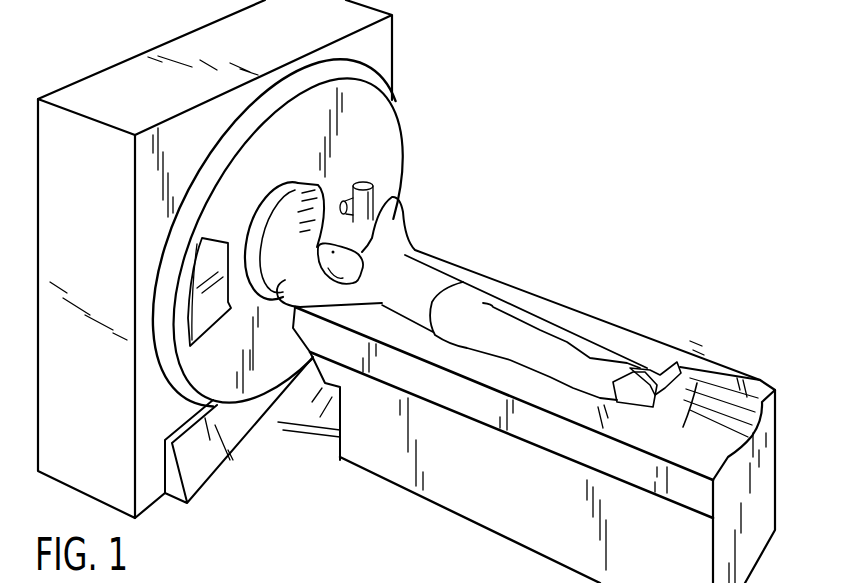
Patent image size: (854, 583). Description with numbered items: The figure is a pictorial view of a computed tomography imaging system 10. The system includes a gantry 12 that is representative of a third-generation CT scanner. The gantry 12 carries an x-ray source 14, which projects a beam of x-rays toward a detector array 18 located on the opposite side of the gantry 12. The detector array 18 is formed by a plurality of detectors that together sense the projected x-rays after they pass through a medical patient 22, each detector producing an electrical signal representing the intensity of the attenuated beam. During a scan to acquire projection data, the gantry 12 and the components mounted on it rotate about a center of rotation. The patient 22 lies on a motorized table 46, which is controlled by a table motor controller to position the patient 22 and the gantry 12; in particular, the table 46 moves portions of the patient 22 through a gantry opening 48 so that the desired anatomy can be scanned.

The computed tomography (CT) imaging system 10 is at (505, 134).
The gantry 12 is at (382, 148).
The x-ray source 14 is at (373, 202).
The detector array 18 is at (204, 322).
The medical patient 22 is at (428, 275).
The motorized table 46 is at (519, 528).
The gantry opening 48 is at (277, 229).